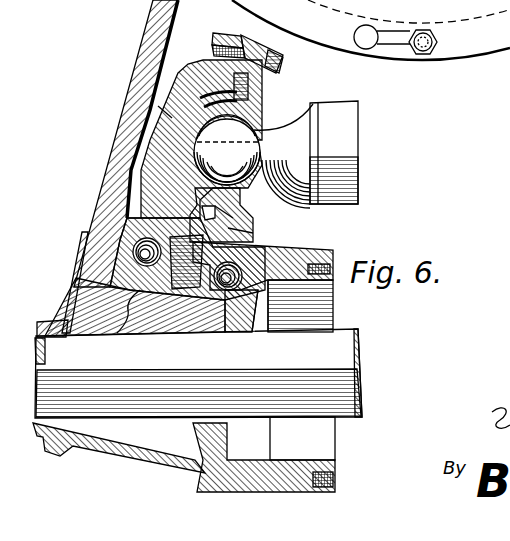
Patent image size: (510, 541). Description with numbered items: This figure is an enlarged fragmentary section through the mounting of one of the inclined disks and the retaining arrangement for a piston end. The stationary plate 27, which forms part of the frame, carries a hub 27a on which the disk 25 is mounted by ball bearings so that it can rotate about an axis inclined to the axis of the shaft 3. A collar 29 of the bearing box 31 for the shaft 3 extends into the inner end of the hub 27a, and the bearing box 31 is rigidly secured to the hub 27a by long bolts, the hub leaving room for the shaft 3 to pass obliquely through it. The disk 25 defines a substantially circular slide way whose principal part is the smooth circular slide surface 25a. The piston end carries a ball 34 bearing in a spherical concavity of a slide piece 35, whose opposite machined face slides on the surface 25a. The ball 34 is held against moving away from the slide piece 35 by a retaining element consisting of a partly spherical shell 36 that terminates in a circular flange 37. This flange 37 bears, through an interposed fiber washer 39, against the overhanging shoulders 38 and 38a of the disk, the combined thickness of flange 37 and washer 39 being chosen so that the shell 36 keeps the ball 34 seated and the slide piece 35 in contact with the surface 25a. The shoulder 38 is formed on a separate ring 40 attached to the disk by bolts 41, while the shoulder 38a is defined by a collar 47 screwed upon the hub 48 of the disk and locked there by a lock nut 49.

The shaft 3 is at (357, 350).
The disk 25 is at (166, 82).
The slide surface 25a is at (160, 128).
The stationary plate 27 is at (147, 58).
The hub 27a is at (135, 320).
The collar 29 is at (163, 463).
The bearing box 31 is at (250, 490).
The ball 34 is at (227, 150).
The slide piece 35 is at (168, 110).
The partly spherical shell 36 is at (247, 132).
The circular flange 37 is at (165, 188).
The overhanging shoulder 38 is at (274, 88).
The overhanging shoulder 38a is at (228, 228).
The washer 39 is at (232, 208).
The ring 40 is at (251, 33).
The bolt 41 is at (281, 66).
The collar 47 is at (233, 218).
The hub of the disk 48 is at (332, 295).
The lock nut 49 is at (253, 233).